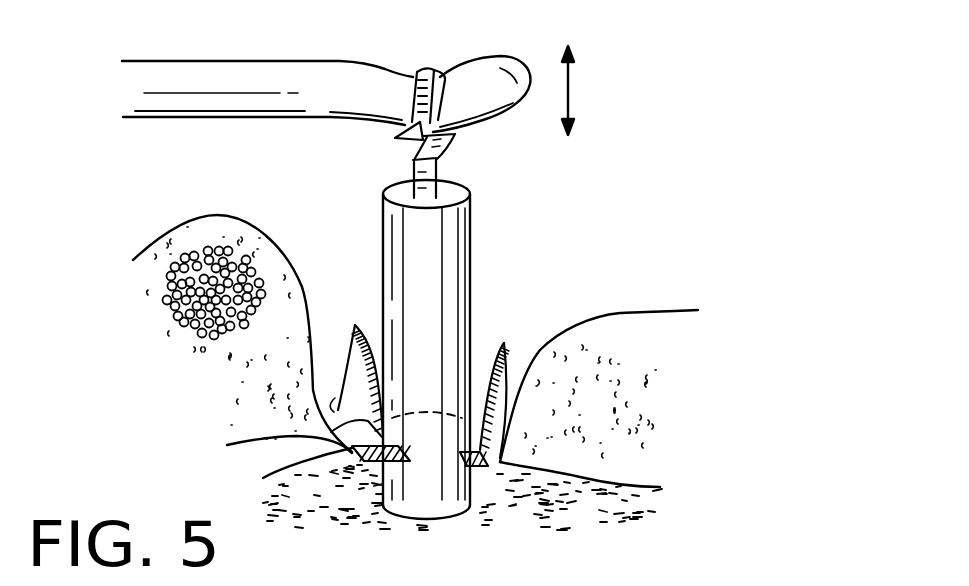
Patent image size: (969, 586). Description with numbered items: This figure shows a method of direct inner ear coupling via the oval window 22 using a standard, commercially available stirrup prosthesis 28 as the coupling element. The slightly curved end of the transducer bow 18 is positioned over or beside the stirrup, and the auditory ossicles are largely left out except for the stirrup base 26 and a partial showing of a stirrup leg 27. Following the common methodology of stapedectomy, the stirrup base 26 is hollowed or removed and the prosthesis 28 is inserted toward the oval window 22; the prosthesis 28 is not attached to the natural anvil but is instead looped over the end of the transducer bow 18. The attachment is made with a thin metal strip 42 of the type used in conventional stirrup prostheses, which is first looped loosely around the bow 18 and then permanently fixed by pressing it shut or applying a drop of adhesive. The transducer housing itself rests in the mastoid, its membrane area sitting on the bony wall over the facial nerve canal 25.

The transducer bow 18 is at (227, 75).
The metal strip 42 is at (437, 72).
The stirrup prosthesis 28 is at (448, 307).
The facial nerve canal 25 is at (185, 257).
The stirrup leg 27 is at (343, 347).
The stirrup base 26 is at (421, 459).
The oval window 22 is at (355, 470).